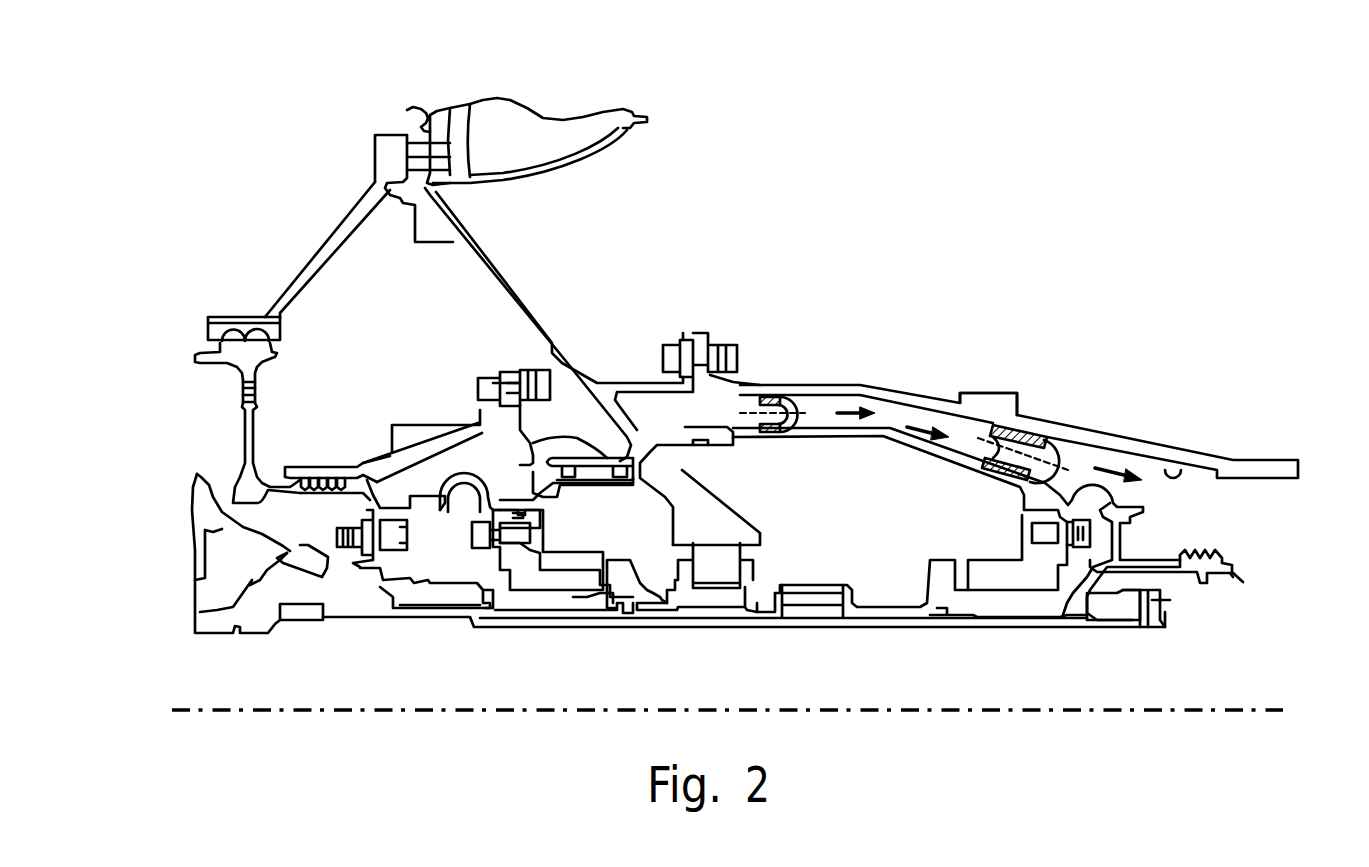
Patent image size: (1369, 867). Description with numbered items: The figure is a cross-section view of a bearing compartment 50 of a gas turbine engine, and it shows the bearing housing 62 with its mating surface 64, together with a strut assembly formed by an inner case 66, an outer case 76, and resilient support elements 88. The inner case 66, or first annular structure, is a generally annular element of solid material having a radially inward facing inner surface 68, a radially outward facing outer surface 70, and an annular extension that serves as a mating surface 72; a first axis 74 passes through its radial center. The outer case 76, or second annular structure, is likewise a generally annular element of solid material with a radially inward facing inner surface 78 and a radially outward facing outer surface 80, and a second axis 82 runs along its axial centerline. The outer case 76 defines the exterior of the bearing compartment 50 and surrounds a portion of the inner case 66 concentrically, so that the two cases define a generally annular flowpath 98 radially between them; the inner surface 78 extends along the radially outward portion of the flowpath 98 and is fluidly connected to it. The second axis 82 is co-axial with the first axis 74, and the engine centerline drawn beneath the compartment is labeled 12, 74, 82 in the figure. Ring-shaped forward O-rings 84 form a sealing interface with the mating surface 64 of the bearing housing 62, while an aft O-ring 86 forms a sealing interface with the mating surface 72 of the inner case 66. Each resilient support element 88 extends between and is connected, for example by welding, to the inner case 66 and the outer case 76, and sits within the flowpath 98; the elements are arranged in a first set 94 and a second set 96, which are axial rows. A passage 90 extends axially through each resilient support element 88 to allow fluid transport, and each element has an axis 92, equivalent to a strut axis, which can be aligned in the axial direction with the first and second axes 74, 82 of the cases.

The bearing compartment 50 is at (1128, 235).
The bearing housing 62 is at (505, 288).
The mating surface 64 is at (580, 458).
The forward O-rings 84 is at (473, 417).
The aft O-ring 86 is at (700, 447).
The mating surface 72 is at (747, 387).
The outer surface 70 is at (825, 393).
The outer surface 80 is at (863, 387).
The flowpath 98 is at (962, 425).
The second set of resilient support elements 96 is at (1033, 426).
The inner surface 78 is at (1190, 460).
The outer case 76 is at (1205, 452).
The inner surface 68 is at (883, 436).
The inner case 66 is at (898, 420).
The first set of resilient support elements 94 is at (768, 380).
The passages 90 is at (948, 358).
The resilient support elements 88 is at (948, 348).
The axes 92 is at (915, 348).
The engine central axis 12 is at (727, 685).
The first axis 74 is at (727, 685).
The second axis 82 is at (218, 708).